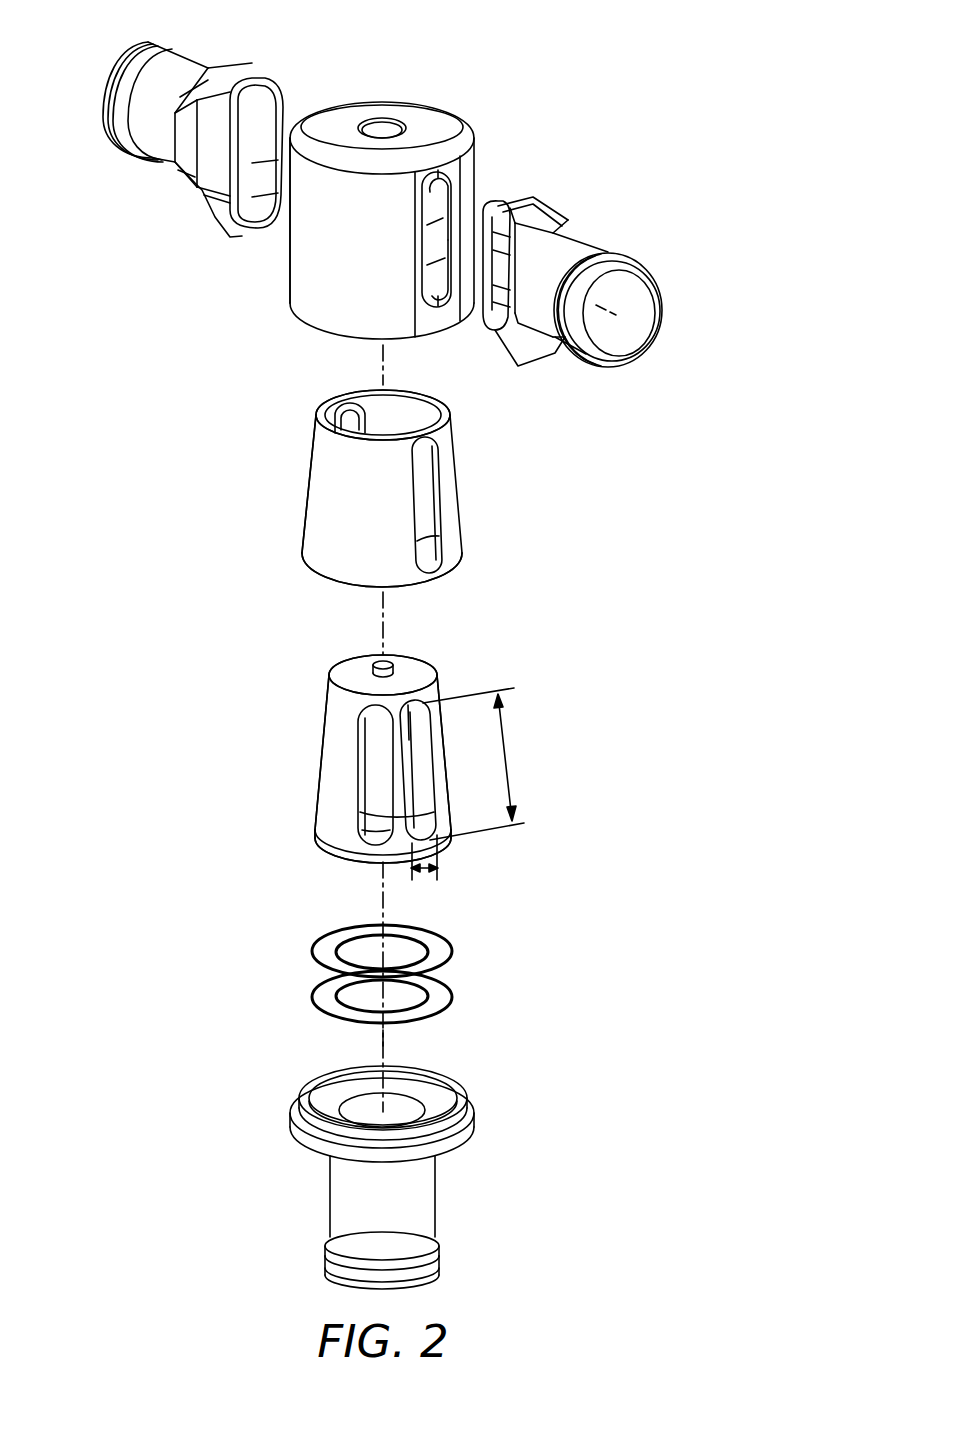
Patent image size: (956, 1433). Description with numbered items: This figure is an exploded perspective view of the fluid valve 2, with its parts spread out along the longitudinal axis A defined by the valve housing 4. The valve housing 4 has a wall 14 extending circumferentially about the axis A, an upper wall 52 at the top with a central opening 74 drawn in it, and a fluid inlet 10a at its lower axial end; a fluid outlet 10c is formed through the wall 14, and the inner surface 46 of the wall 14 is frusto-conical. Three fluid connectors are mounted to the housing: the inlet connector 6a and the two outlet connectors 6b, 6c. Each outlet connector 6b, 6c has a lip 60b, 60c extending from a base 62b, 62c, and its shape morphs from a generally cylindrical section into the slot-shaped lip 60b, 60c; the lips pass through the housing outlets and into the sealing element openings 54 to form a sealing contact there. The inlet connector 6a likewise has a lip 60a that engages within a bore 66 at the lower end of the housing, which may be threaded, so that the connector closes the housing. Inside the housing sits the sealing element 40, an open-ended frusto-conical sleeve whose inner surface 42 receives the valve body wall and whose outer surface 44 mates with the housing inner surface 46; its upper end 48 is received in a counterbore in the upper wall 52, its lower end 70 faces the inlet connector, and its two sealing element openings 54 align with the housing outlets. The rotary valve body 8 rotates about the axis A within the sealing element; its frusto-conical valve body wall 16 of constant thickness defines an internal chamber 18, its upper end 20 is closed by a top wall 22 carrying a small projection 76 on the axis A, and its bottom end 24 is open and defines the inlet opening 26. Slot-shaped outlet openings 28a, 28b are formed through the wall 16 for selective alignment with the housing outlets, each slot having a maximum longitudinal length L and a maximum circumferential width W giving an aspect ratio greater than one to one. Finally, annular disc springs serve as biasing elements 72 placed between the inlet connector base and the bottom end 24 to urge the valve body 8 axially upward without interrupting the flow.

The fluid valve 2 is at (676, 186).
The valve housing 4 is at (478, 142).
The inlet connector 6a is at (432, 1192).
The fluid outlet connector 6b is at (103, 128).
The fluid outlet connector 6c is at (640, 358).
The rotary valve body 8 is at (438, 688).
The fluid inlet 10a is at (432, 298).
The fluid outlet 10c is at (436, 186).
The wall 14 is at (297, 274).
The valve body wall 16 is at (332, 812).
The internal chamber 18 is at (418, 776).
The upper end 20 is at (302, 675).
The top wall 22 is at (425, 670).
The bottom end 24 is at (325, 848).
The inlet opening 26 is at (375, 843).
The outlet opening 28a is at (412, 743).
The outlet opening 28b is at (373, 788).
The sealing element 40 is at (462, 525).
The frusto-conical inner surface 42 is at (398, 403).
The frusto-conical outer surface 44 is at (316, 513).
The frusto-conical inner surface 46 is at (432, 250).
The upper end 48 is at (320, 403).
The upper wall 52 is at (427, 110).
The sealing element opening 54 is at (350, 408).
The lip 60a is at (448, 1074).
The lip 60b is at (258, 96).
The lip 60c is at (488, 201).
The base 62b is at (208, 170).
The base 62c is at (553, 210).
The bore 66 is at (180, 66).
The lower end 70 is at (332, 580).
The biasing elements 72 is at (454, 988).
The top hole 74 is at (383, 126).
The pin 76 is at (386, 660).
The maximum longitudinal length L is at (476, 764).
The maximum circumferential width W is at (425, 869).
The longitudinal axis A is at (381, 1038).